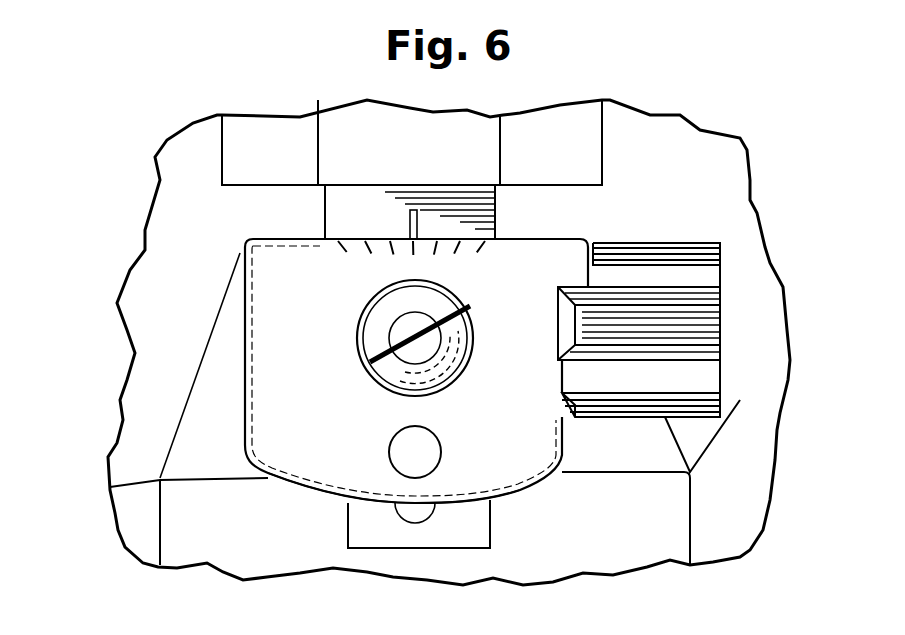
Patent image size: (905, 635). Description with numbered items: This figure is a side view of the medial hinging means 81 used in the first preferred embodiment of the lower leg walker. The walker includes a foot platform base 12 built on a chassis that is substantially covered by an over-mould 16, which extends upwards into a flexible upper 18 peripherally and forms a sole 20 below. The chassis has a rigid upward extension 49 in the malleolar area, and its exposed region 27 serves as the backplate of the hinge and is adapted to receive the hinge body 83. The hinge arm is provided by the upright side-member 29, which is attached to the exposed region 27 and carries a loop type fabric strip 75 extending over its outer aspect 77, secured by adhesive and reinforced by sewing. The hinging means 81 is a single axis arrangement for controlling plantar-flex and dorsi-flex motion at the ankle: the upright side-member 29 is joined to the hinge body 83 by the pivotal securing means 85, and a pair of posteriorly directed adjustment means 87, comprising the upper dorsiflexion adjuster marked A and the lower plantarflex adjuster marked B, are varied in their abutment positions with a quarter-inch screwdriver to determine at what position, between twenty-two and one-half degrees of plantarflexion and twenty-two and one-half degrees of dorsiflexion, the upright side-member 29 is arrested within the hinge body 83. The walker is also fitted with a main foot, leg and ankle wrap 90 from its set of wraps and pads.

The foot platform base 12 is at (124, 544).
The over-mould 16 is at (647, 567).
The flexible upper 18 is at (126, 492).
The sole 20 is at (411, 262).
The exposed region of rigid upward extension 27 is at (603, 460).
The upright side-member 29 is at (368, 202).
The rigid upward extension of chassis 49 is at (226, 424).
The loop type fabric strip 75 is at (533, 131).
The outer aspect of upright side-member 77 is at (340, 211).
The medial hinging means 81 is at (248, 308).
The hinge body 83 is at (327, 467).
The pivotal securing means 85 is at (462, 333).
The posteriorly directed adjustment means 87 is at (690, 472).
The main foot, leg and ankle wrap 90 is at (748, 178).